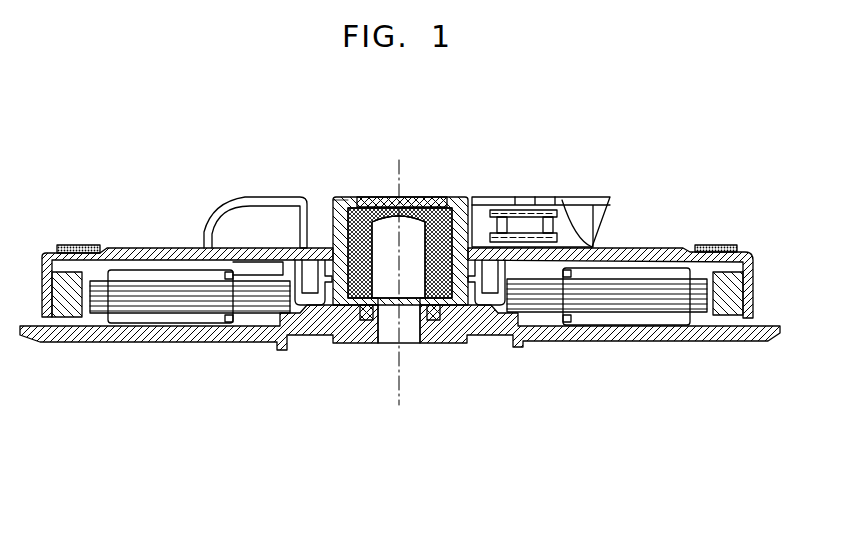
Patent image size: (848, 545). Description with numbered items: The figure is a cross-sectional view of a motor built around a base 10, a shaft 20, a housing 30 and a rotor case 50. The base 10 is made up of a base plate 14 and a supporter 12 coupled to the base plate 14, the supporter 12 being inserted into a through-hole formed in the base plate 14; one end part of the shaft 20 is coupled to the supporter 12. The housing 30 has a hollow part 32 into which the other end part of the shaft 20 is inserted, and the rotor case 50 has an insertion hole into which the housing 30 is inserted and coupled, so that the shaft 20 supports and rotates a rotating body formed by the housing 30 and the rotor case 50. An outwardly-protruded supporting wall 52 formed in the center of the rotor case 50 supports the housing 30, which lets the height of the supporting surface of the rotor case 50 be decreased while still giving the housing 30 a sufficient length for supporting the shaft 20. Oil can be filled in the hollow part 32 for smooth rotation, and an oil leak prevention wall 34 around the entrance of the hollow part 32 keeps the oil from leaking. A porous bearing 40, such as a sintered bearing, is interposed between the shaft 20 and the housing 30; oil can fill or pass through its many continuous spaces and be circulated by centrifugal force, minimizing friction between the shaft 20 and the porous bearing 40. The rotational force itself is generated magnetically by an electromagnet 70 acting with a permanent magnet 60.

The base 10 is at (400, 411).
The supporter 12 is at (491, 338).
The base plate 14 is at (612, 340).
The shaft 20 is at (410, 205).
The housing 30 is at (434, 265).
The hollow part 32 is at (345, 198).
The oil leak prevention wall 34 is at (434, 322).
The porous bearing 40 is at (360, 322).
The rotor case 50 is at (662, 247).
The supporting wall 52 is at (478, 210).
The permanent magnet 60 is at (735, 292).
The electromagnet 70 is at (673, 305).